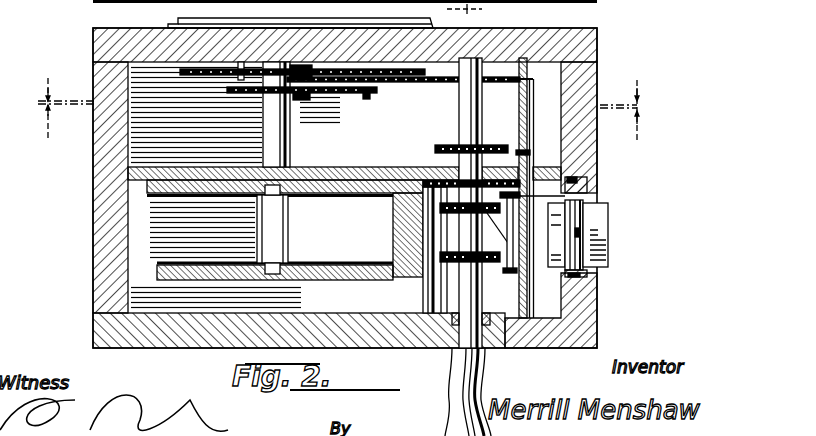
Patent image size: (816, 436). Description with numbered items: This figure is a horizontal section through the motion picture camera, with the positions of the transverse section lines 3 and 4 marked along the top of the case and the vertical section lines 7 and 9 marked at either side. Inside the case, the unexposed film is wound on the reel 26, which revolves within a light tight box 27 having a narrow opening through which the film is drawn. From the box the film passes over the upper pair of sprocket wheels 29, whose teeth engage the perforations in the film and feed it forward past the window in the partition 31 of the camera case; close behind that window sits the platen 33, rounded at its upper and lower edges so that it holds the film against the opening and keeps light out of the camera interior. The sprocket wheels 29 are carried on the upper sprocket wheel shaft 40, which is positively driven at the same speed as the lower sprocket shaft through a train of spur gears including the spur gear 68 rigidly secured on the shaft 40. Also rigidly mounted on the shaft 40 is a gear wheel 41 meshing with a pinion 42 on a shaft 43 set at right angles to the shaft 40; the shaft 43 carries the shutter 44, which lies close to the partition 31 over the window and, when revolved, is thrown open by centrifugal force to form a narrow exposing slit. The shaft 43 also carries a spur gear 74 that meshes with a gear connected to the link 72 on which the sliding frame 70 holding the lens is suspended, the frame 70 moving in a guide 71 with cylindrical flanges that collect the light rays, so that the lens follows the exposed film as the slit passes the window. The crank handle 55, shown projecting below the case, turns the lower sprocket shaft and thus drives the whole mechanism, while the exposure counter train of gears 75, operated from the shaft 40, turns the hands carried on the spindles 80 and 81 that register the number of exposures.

The section line 3- 3 is at (508, 10).
The section line 4- 4 is at (453, 12).
The section line 7- 7 is at (341, 98).
The section line 9- 9 is at (337, 152).
The reel 26 is at (352, 262).
The light tight box 27 is at (167, 270).
The sprocket wheels 29 is at (433, 287).
The partition 31 is at (527, 113).
The platen 33 is at (507, 268).
The upper sprocket wheel shaft 40 is at (468, 299).
The gear wheel 41 is at (432, 167).
The pinion 42 is at (519, 170).
The shaft 43 is at (537, 197).
The shutter 44 is at (529, 152).
The crank handle 55 is at (470, 395).
The spur gear 68 is at (443, 145).
The sliding frame 70 is at (590, 271).
The guide 71 is at (578, 274).
The link 72 is at (583, 230).
The spur gear 74 is at (588, 190).
The train of gears 75 is at (325, 93).
The spindle 80 is at (366, 96).
The spindle 81 is at (241, 80).